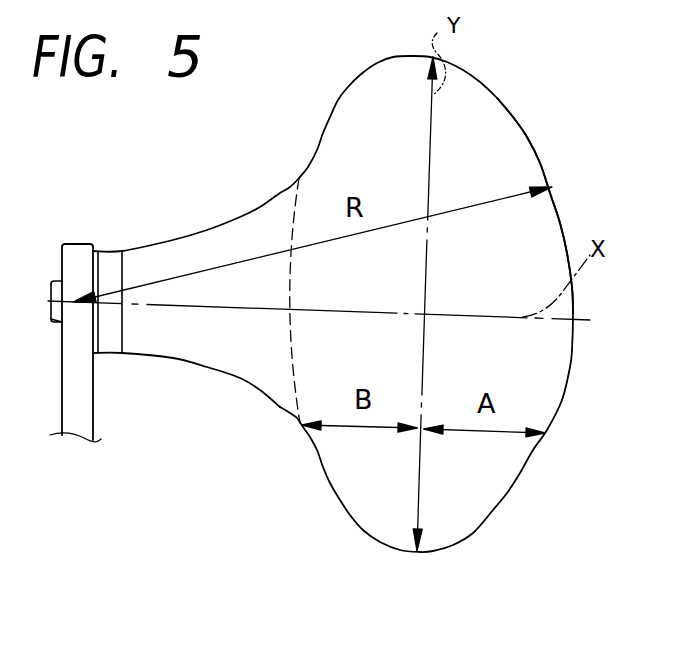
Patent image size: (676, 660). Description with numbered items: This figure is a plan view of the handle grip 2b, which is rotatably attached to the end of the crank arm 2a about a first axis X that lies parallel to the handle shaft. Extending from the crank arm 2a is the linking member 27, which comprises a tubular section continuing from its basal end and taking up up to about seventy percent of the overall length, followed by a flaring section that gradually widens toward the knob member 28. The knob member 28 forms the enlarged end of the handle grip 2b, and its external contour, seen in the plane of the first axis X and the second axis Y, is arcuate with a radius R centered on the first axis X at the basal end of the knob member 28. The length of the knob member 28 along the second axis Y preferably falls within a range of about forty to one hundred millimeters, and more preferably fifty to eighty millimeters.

The crank arm 2a is at (76, 243).
The handle grip 2b is at (488, 75).
The linking member 27 is at (190, 236).
The knob member 28 is at (502, 128).